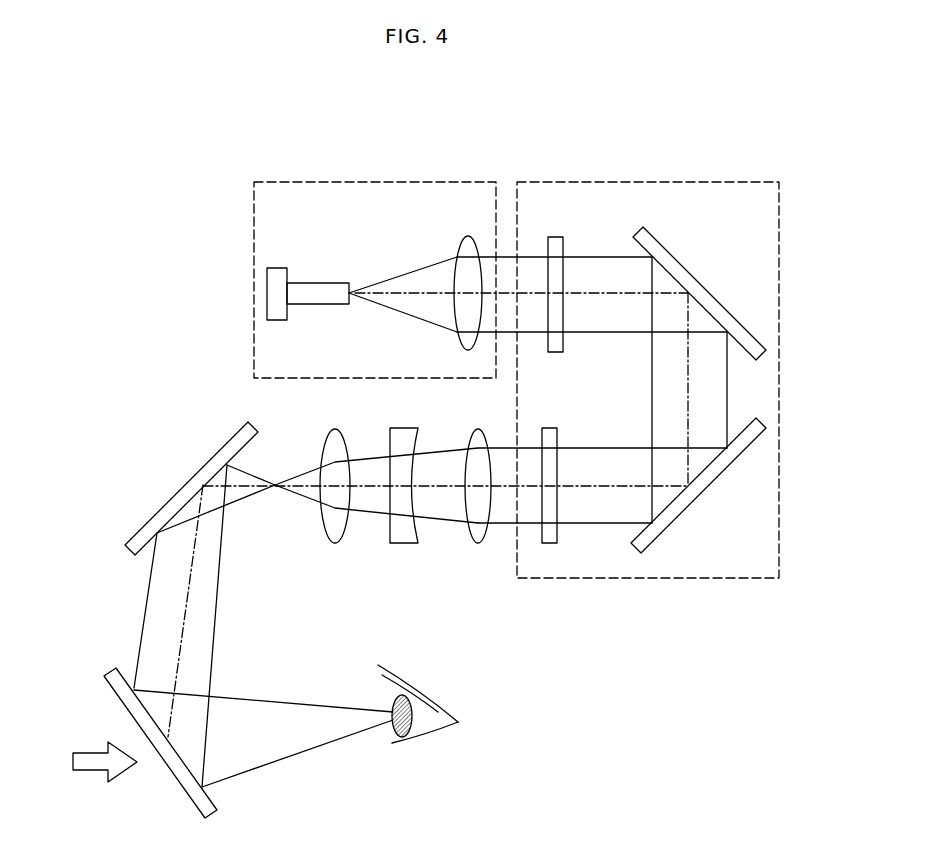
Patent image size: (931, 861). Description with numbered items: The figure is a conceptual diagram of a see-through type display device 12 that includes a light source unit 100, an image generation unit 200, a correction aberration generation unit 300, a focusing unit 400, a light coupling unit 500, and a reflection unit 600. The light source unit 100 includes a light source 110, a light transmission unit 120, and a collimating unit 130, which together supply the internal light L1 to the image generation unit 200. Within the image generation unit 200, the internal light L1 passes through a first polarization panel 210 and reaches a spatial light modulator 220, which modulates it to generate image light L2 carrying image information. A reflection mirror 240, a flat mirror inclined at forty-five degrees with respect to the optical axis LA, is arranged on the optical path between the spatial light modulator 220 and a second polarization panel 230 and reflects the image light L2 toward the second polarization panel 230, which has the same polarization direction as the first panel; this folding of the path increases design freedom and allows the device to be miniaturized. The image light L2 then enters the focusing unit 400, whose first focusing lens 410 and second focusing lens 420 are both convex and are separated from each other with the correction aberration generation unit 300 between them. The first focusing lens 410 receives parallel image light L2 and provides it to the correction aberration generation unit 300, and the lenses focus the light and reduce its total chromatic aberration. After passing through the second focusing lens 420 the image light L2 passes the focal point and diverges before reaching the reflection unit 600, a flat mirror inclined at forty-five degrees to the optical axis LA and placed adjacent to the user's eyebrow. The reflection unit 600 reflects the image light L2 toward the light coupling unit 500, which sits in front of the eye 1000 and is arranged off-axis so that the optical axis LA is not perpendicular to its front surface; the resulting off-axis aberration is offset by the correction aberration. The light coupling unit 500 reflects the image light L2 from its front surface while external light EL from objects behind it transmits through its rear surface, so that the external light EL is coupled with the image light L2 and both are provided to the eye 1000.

The see-through type display device 12 is at (770, 114).
The light source unit 100 is at (385, 180).
The light source 110 is at (276, 268).
The light transmission unit 120 is at (328, 283).
The collimating unit 130 is at (468, 237).
The internal light L1 is at (408, 313).
The image generation unit 200 is at (647, 180).
The first polarization panel 210 is at (555, 237).
The spatial light modulator 220 is at (683, 265).
The second polarization panel 230 is at (550, 428).
The reflection mirror 240 is at (705, 492).
The image light L2 is at (728, 402).
The correction aberration generation unit 300 is at (407, 428).
The focusing unit 400 is at (405, 533).
The first focusing lens 410 is at (477, 542).
The second focusing lens 420 is at (344, 512).
The optical axis LA is at (303, 485).
The reflection unit 600 is at (125, 553).
The light coupling unit 500 is at (112, 672).
The external light EL is at (88, 770).
The eye 1000 is at (427, 742).